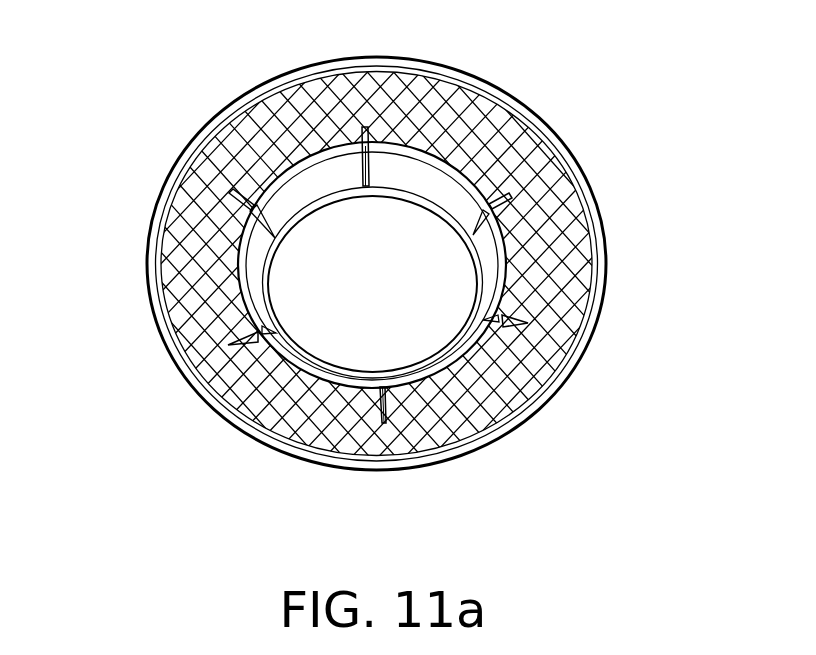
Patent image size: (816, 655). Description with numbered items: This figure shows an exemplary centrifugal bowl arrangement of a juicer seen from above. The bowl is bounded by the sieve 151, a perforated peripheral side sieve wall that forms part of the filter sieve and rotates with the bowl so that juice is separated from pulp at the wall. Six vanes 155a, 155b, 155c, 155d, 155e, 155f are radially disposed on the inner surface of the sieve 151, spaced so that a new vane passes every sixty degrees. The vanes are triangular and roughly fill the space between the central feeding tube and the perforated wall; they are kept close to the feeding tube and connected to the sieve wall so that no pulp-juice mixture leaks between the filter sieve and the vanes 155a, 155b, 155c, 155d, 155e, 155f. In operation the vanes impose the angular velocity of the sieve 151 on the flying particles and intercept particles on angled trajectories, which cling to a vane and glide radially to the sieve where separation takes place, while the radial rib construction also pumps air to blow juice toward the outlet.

The sieve 151 is at (384, 88).
The vane 155a is at (370, 128).
The vane 155b is at (508, 190).
The vane 155c is at (523, 308).
The vane 155d is at (400, 407).
The vane 155e is at (228, 340).
The vane 155f is at (238, 192).